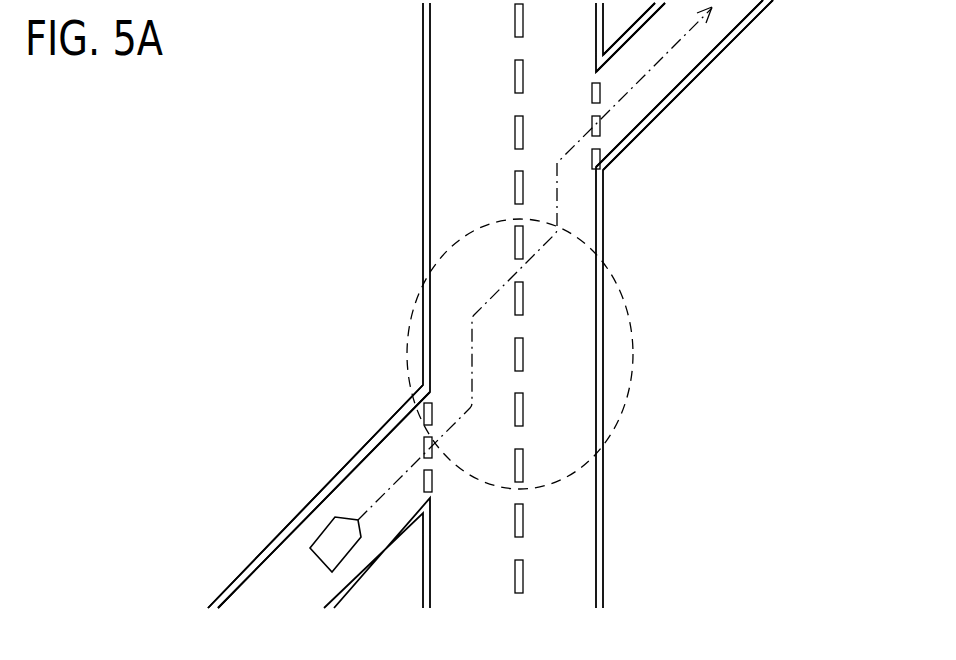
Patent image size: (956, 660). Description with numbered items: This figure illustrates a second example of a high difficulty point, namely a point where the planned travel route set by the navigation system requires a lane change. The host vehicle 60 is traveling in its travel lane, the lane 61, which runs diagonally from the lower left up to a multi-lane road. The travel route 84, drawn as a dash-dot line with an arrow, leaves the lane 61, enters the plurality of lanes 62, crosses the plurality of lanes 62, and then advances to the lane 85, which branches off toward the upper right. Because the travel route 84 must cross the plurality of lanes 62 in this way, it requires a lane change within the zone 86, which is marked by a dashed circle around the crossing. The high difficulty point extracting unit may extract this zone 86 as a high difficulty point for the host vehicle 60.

The host vehicle 60 is at (327, 528).
The lane 61 is at (283, 593).
The plurality of lanes 62 is at (555, 560).
The travel route 84 is at (558, 165).
The lane 85 is at (687, 55).
The zone 86 is at (635, 340).